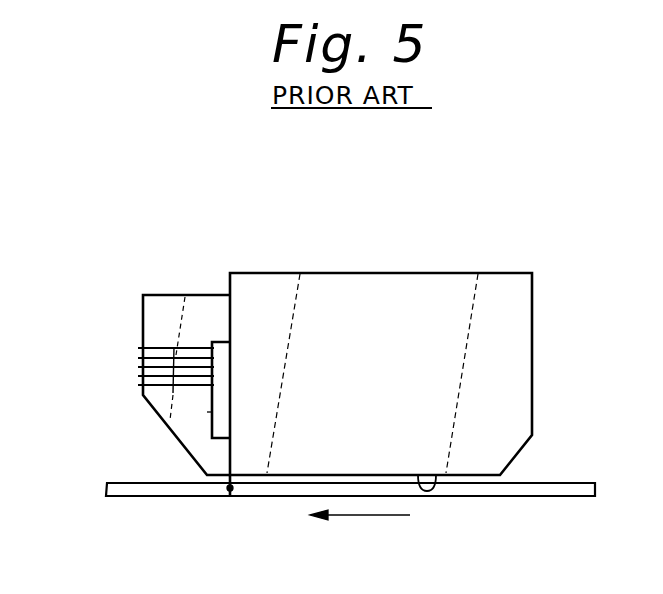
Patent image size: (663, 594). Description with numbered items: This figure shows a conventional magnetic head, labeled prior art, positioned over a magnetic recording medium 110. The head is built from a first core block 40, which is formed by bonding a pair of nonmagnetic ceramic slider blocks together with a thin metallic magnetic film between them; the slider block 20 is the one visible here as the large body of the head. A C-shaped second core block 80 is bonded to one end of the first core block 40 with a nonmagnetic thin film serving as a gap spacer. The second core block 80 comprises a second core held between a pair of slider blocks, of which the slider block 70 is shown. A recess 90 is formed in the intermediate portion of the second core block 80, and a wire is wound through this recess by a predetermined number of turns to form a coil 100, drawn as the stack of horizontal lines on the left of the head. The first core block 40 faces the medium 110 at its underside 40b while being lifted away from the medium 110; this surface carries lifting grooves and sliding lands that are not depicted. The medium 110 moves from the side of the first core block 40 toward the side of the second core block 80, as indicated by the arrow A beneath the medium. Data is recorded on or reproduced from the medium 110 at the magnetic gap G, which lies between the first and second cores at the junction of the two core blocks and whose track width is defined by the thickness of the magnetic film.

The slider block 20 is at (378, 297).
The first core block 40 is at (516, 256).
The underside 40b is at (426, 483).
The slider block 70 is at (162, 312).
The second core block 80 is at (118, 341).
The recess 90 is at (210, 415).
The coil 100 is at (190, 344).
The magnetic recording medium 110 is at (492, 491).
The magnetic gap G is at (230, 497).
The arrow A is at (363, 515).